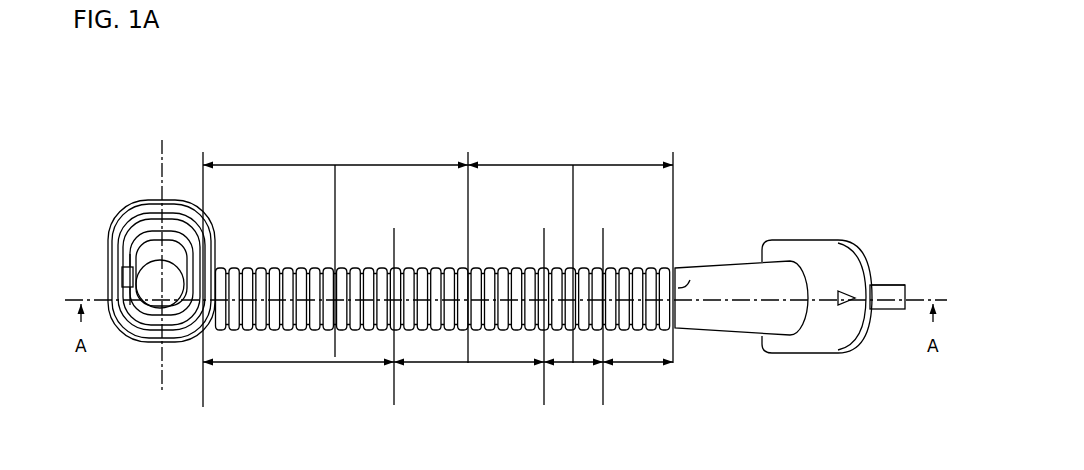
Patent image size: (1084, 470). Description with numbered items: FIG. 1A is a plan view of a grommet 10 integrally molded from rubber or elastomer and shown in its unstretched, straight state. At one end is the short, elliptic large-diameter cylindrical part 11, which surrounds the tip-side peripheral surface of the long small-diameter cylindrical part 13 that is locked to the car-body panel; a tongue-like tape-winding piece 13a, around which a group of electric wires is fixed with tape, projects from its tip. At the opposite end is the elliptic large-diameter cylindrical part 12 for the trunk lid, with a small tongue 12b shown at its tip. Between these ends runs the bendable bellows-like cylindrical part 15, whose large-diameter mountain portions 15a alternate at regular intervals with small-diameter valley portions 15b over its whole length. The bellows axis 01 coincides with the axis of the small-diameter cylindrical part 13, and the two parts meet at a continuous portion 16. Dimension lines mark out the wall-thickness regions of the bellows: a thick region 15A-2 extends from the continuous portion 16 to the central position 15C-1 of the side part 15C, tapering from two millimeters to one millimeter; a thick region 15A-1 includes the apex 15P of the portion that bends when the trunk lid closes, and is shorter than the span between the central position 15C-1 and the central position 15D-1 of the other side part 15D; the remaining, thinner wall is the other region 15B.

The grommet 10 is at (250, 94).
The large-diameter cylindrical part 11 is at (808, 250).
The large-diameter cylindrical part 12 is at (140, 203).
The locking piece 12b is at (128, 292).
The small-diameter cylindrical part 13 is at (722, 325).
The tongue-like tape-winding piece 13a is at (885, 310).
The bellows-like cylindrical part 15 is at (417, 256).
The mountain portion 15a is at (277, 271).
The valley portion 15b is at (268, 272).
The thick region 15A-1 is at (469, 374).
The thick region 15A-2 is at (638, 374).
The other region 15B is at (403, 316).
The side part 15C is at (570, 251).
The central position of side part 15C-1 is at (570, 291).
The side part 15D is at (335, 273).
The central position of side part 15D-1 is at (350, 292).
The apex of bent portion 15P is at (462, 291).
The continuous portion 16 is at (690, 280).
The axis of bellows-like cylindrical part 01 is at (905, 254).